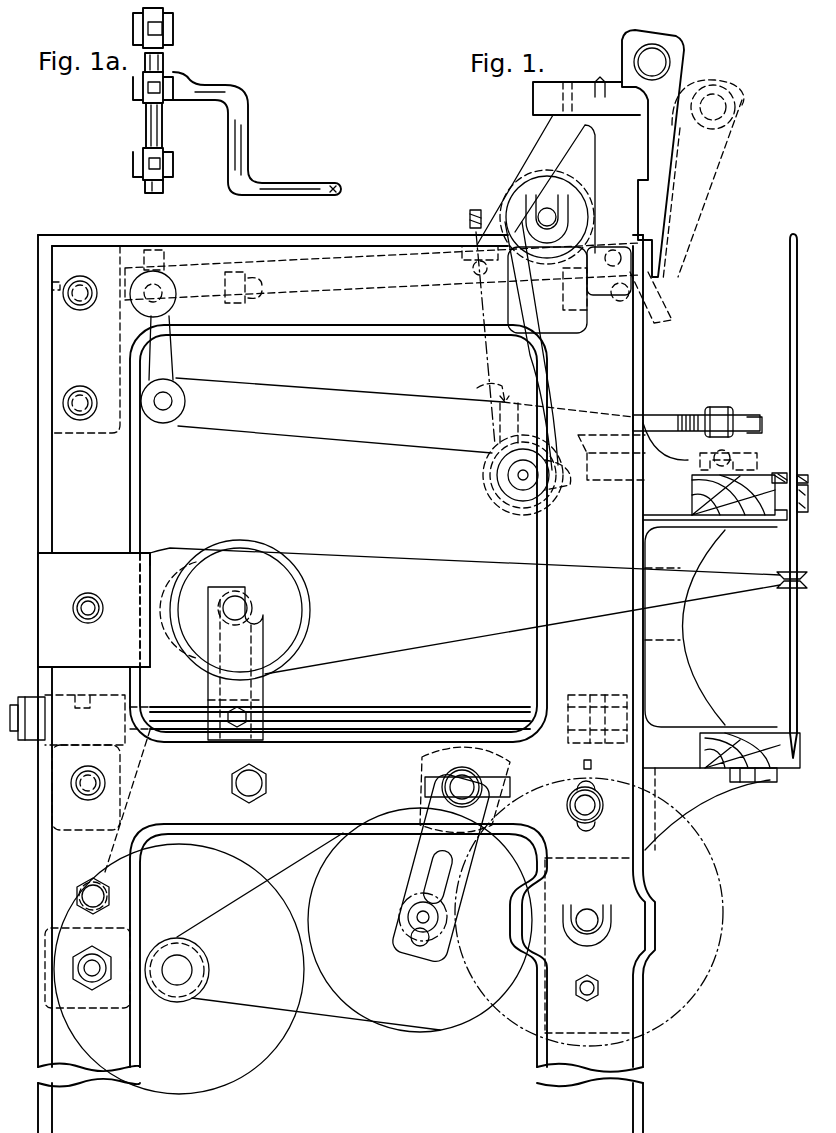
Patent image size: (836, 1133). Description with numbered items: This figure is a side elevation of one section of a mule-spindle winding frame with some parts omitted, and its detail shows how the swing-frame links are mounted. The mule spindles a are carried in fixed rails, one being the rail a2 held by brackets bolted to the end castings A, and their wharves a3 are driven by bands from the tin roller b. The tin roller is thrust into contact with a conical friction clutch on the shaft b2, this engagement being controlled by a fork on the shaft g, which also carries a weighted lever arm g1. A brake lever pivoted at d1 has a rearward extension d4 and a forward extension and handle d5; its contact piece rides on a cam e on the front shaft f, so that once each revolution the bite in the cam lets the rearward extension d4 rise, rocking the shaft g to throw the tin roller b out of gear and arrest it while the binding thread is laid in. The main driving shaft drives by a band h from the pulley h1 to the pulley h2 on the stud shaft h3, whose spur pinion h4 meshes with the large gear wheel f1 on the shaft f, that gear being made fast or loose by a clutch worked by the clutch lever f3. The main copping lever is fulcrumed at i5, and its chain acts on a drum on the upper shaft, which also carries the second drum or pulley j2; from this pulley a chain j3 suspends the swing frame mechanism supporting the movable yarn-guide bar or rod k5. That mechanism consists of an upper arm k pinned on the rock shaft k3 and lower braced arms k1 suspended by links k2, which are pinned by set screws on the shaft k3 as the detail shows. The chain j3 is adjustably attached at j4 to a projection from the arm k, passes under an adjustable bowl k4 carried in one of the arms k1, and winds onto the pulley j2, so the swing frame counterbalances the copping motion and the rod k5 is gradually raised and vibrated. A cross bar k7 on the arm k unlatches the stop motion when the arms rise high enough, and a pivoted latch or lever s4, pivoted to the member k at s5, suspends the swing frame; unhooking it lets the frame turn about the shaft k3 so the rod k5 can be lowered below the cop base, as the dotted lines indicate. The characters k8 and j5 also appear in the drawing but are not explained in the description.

In FIG. 1, the main frame A is at (346, 684).
In FIG. 1A, the upper arm k is at (283, 185).
In FIG. 1, the upper arm k is at (356, 278).
In FIG. 1, the lower braced arms k1 is at (330, 392).
In FIG. 1A, the links k2 is at (175, 33).
In FIG. 1, the links k2 is at (166, 358).
In FIG. 1A, the rock shaft k3 is at (165, 62).
In FIG. 1, the rock shaft k3 is at (160, 292).
In FIG. 1, the adjustable bowl k4 is at (512, 497).
In FIG. 1, the yarn guide bar k5 is at (750, 417).
In FIG. 1, the cross bar k7 is at (480, 384).
In FIG. 1, the pivot stud k8 is at (168, 416).
In FIG. 1, the second drum or pulley j2 is at (543, 182).
In FIG. 1, the chain j3 is at (484, 444).
In FIG. 1, the chain attachment j4 is at (474, 203).
In FIG. 1, the bracket j5 is at (560, 323).
In FIG. 1, the pivoted latch or lever s4 is at (680, 48).
In FIG. 1, the latch pivot s5 is at (637, 260).
In FIG. 1, the mule spindles a is at (790, 650).
In FIG. 1, the fixed rail a2 is at (754, 518).
In FIG. 1, the wharves a3 is at (781, 590).
In FIG. 1, the tin roller b is at (290, 606).
In FIG. 1, the clutch shaft b2 is at (230, 608).
In FIG. 1, the rock shaft g is at (410, 716).
In FIG. 1, the weighted lever arm g1 is at (40, 692).
In FIG. 1, the brake lever pivot d1 is at (268, 781).
In FIG. 1, the rearward extension d4 is at (704, 790).
In FIG. 1, the forward extension and handle d5 is at (715, 680).
In FIG. 1, the cam e is at (178, 978).
In FIG. 1, the front shaft f is at (592, 920).
In FIG. 1, the large gear wheel f1 is at (684, 1006).
In FIG. 1, the clutch lever f3 is at (577, 770).
In FIG. 1, the band h is at (314, 1020).
In FIG. 1, the pulley h1 is at (212, 956).
In FIG. 1, the pulley h2 is at (343, 992).
In FIG. 1, the stud shaft h3 is at (410, 920).
In FIG. 1, the spur pinion h4 is at (433, 955).
In FIG. 1, the copping lever fulcrum i5 is at (121, 899).